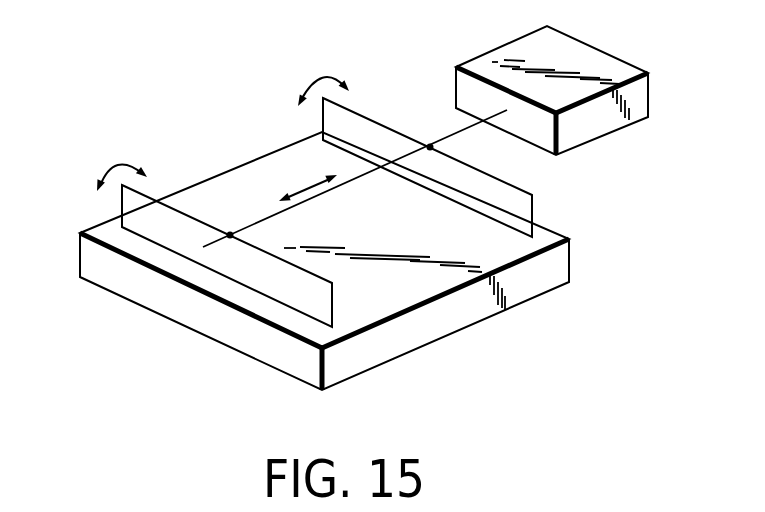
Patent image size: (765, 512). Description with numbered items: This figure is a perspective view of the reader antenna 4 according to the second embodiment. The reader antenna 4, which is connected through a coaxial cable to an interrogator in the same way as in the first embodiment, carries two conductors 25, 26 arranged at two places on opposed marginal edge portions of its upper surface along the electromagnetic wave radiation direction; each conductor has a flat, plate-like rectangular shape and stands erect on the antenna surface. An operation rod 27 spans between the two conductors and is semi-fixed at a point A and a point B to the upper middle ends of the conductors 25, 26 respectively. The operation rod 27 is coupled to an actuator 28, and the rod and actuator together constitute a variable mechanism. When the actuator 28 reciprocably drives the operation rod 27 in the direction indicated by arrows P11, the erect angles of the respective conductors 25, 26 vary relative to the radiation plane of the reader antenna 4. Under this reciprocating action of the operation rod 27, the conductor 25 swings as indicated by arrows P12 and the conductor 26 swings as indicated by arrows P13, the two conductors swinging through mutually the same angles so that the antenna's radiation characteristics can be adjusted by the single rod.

The reader antenna 4 is at (427, 337).
The conductor 25 is at (137, 220).
The conductor 26 is at (533, 207).
The operation rod 27 is at (370, 176).
The actuator 28 is at (640, 102).
The point A is at (230, 232).
The point B is at (429, 145).
The arrows P11 is at (305, 187).
The arrows P12 is at (121, 163).
The arrows P13 is at (323, 77).